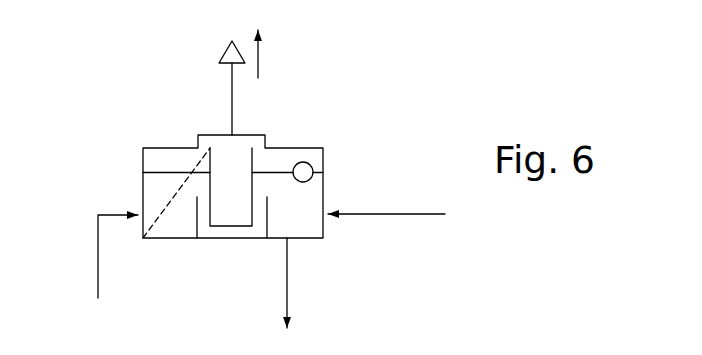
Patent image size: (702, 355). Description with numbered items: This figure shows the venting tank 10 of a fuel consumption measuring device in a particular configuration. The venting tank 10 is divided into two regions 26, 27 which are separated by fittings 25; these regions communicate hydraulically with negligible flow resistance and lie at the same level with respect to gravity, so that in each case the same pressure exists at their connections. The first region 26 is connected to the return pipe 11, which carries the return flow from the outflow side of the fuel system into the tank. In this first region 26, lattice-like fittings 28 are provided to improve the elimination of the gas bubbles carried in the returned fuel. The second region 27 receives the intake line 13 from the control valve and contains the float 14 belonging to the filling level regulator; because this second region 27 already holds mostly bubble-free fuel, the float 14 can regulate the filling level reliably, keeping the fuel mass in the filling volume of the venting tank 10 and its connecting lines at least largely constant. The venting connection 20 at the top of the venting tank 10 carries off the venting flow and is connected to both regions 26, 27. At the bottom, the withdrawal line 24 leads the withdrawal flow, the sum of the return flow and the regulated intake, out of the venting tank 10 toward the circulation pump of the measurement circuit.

The venting tank 10 is at (158, 247).
The return pipe 11 is at (97, 273).
The intake line 13 is at (418, 214).
The float 14 is at (308, 164).
The venting connection 20 is at (230, 82).
The withdrawal line 24 is at (290, 258).
The fittings 25 is at (232, 252).
The first region 26 is at (143, 163).
The second region 27 is at (302, 212).
The lattice-like fittings 28 is at (178, 190).